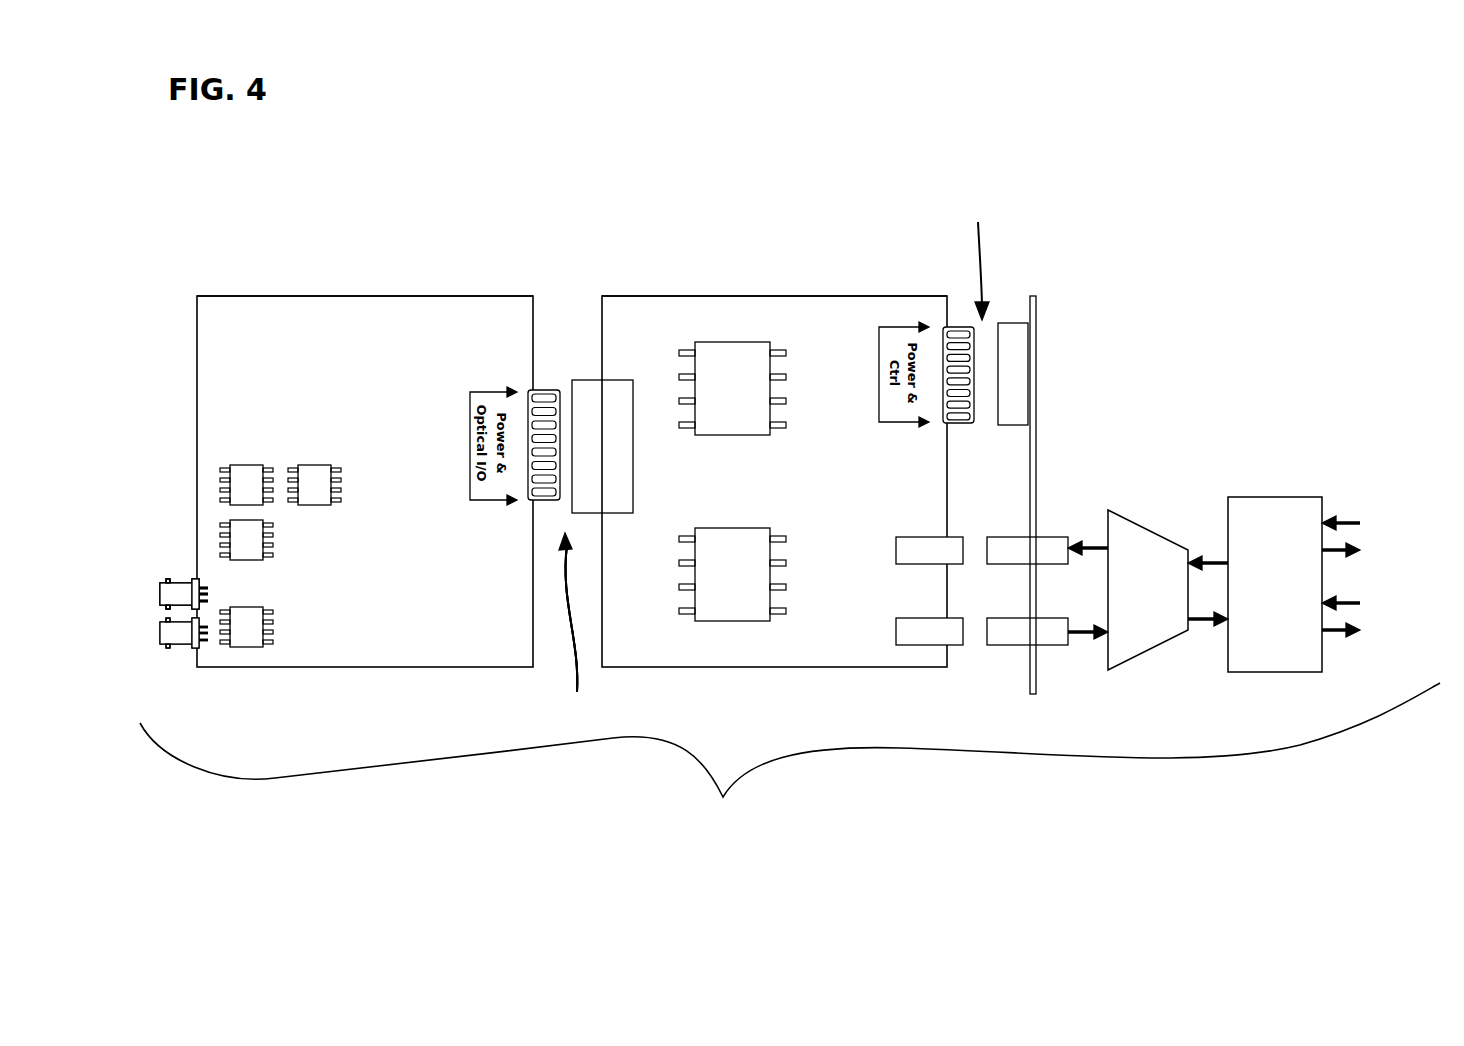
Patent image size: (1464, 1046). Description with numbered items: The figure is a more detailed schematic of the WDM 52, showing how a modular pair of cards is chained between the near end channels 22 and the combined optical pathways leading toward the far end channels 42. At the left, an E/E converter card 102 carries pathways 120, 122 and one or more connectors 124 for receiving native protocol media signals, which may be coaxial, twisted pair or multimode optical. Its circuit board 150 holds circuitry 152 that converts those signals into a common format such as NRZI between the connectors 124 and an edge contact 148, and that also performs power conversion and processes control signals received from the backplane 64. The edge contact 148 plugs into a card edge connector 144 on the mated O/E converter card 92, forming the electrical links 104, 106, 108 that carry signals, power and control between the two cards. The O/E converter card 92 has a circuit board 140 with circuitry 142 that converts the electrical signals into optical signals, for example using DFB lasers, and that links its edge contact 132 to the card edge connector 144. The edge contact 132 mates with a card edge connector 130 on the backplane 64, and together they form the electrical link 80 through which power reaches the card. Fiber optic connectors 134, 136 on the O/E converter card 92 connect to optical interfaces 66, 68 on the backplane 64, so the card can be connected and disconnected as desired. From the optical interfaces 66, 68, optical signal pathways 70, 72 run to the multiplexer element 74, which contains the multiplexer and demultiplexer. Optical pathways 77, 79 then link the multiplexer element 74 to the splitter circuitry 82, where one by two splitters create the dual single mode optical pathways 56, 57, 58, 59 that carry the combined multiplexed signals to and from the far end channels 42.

The near end individual channels 22 is at (160, 600).
The far end channels 42 is at (1421, 548).
The WDM 52 is at (790, 754).
The optical pathway 56 is at (1330, 553).
The optical pathway 57 is at (1333, 633).
The optical pathway 58 is at (1355, 523).
The optical pathway 59 is at (1355, 604).
The backplane 64 is at (1037, 330).
The optical interface 66 is at (1048, 537).
The optical interface 68 is at (1050, 645).
The optical signal pathway 70 is at (1083, 634).
The optical signal pathway 72 is at (1092, 545).
The multiplexer element 74 is at (1135, 523).
The optical pathway 77 is at (1197, 621).
The optical pathway 79 is at (1214, 561).
The electrical link 80 is at (974, 260).
The splitter circuitry 82 is at (1287, 497).
The O/E converter card 92 is at (733, 667).
The E/E converter card 102 is at (350, 667).
The electrical link 104 is at (616, 625).
The electrical link 106 is at (616, 631).
The electrical link 108 is at (616, 631).
The pathway 120 is at (181, 583).
The pathway 122 is at (180, 643).
The connectors 124 is at (158, 605).
The card edge connector 130 is at (1007, 323).
The edge contact 132 is at (962, 326).
The fiber optic connector 134 is at (957, 537).
The fiber optic connector 136 is at (958, 645).
The circuit board 140 is at (735, 296).
The circuitry 142 is at (725, 435).
The card edge connector 144 is at (585, 380).
The edge contact 148 is at (548, 388).
The circuit board 150 is at (390, 296).
The circuitry 152 is at (316, 465).